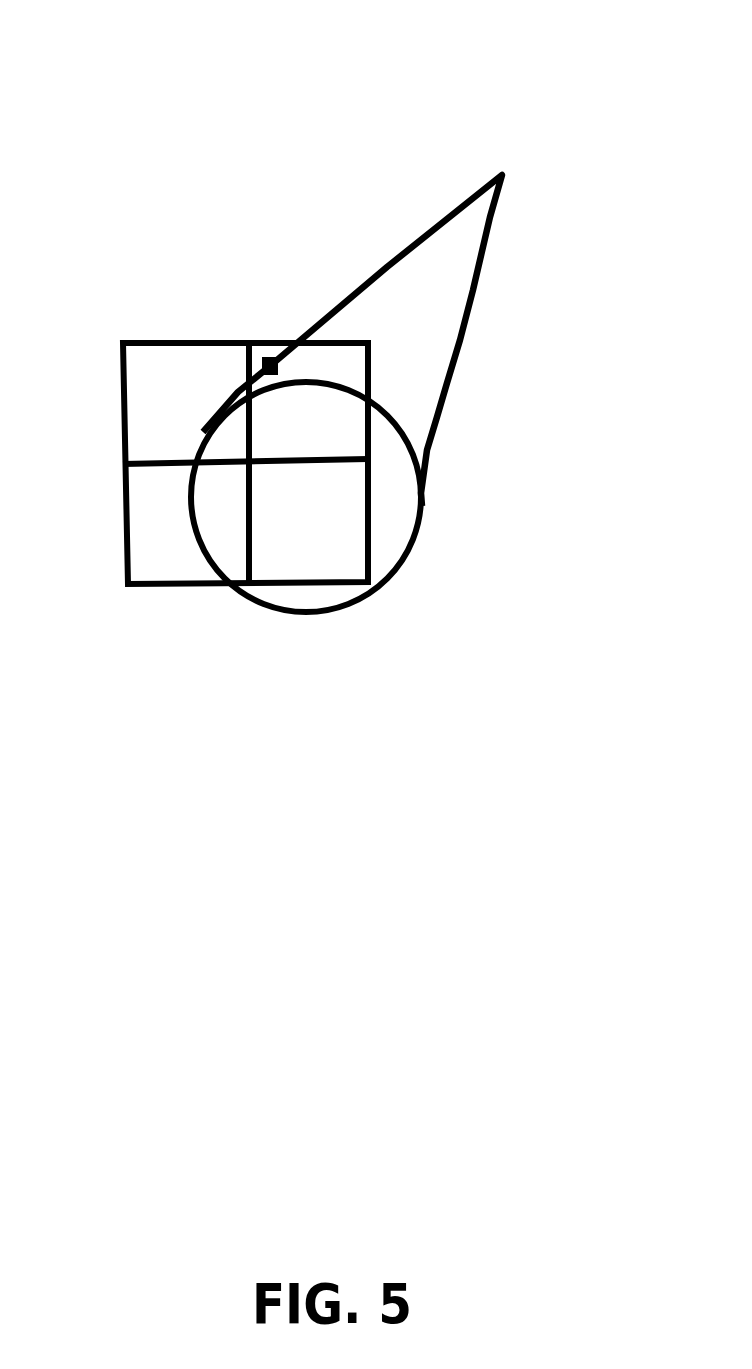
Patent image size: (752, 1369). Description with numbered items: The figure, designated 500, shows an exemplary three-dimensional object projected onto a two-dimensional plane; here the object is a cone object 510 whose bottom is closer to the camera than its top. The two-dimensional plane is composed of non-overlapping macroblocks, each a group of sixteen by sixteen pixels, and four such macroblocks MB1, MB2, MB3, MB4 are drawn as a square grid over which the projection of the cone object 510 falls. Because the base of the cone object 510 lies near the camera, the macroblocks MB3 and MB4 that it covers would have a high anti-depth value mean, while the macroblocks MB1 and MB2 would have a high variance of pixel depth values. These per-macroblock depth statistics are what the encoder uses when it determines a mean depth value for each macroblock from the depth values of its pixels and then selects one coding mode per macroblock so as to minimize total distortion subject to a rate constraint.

The motion estimation diagram 500 is at (330, 56).
The macroblock MB1 is at (122, 387).
The macroblock MB2 is at (157, 585).
The macroblock MB3 is at (263, 343).
The macroblock MB4 is at (375, 535).
The cone object 510 is at (470, 303).